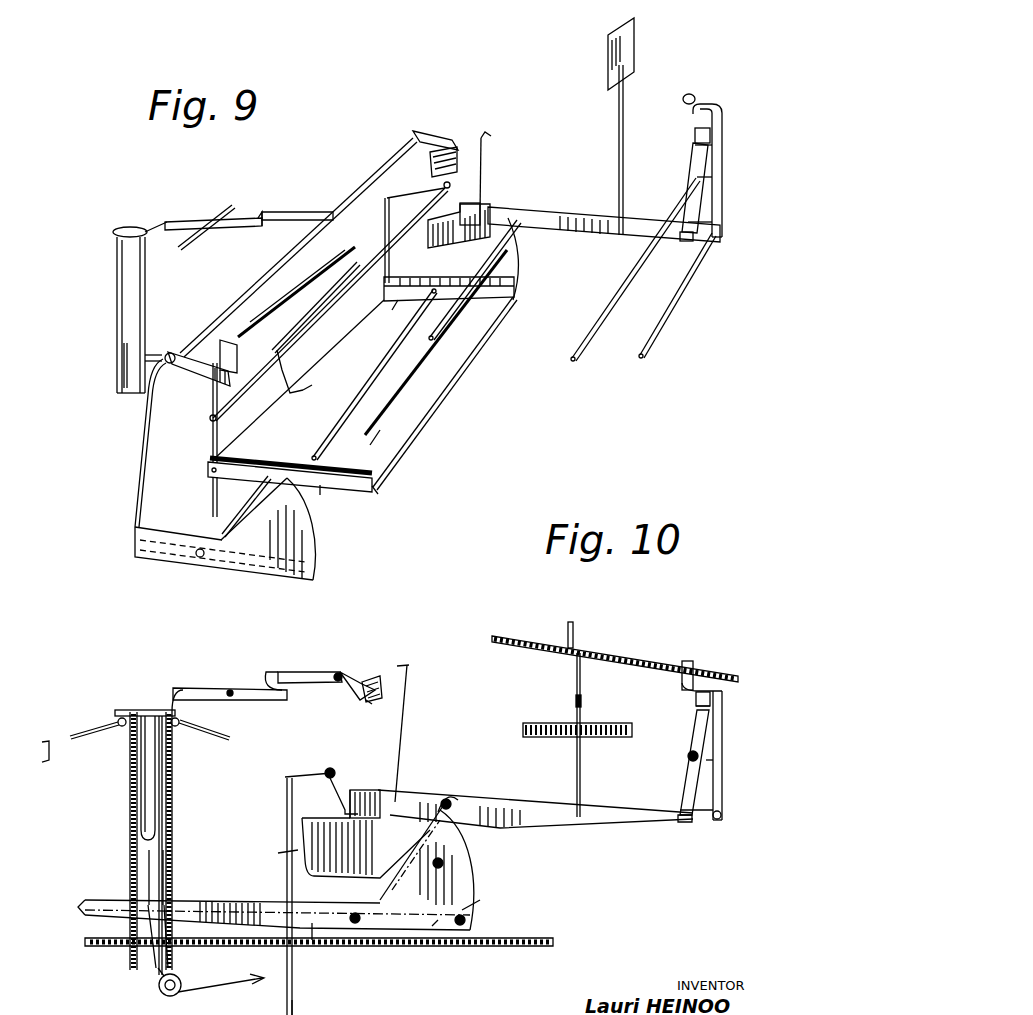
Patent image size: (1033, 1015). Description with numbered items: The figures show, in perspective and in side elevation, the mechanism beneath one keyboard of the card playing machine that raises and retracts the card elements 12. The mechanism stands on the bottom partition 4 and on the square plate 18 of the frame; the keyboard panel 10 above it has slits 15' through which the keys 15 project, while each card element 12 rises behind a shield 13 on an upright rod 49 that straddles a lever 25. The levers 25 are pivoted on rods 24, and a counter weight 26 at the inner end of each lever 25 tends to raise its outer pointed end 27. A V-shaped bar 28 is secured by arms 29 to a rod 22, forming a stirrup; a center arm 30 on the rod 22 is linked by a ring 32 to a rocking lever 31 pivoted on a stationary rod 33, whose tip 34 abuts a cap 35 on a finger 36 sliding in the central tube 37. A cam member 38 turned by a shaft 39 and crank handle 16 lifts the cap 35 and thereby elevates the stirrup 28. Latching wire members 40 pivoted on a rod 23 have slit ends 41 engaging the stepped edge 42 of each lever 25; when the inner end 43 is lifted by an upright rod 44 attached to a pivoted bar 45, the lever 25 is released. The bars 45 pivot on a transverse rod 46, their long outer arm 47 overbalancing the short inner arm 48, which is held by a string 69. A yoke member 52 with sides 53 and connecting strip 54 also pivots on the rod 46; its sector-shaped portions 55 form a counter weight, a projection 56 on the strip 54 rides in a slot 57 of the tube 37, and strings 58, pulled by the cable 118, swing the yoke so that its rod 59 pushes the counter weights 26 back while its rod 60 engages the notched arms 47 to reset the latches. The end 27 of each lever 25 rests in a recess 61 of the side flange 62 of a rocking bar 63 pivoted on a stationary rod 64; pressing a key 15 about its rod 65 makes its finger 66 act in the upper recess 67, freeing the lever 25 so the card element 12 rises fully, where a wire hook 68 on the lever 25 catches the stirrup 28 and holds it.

In FIG. 10, the bottom partition 4 is at (274, 857).
In FIG. 10, the panel 10 is at (626, 658).
In FIG. 9, the card elements 12 is at (634, 46).
In FIG. 10, the card elements 12 is at (576, 678).
In FIG. 10, the shield 13 is at (575, 636).
In FIG. 9, the keys 15 is at (717, 165).
In FIG. 10, the slits 15' is at (686, 726).
In FIG. 10, the crank handle 16 is at (47, 760).
In FIG. 10, the square plate 18 is at (476, 947).
In FIG. 9, the rod 22 is at (228, 308).
In FIG. 10, the rod 22 is at (347, 666).
In FIG. 9, the rod 23 is at (306, 336).
In FIG. 10, the rod 23 is at (334, 768).
In FIG. 9, the pivot rods 24 is at (410, 355).
In FIG. 10, the pivot rods 24 is at (446, 798).
In FIG. 9, the levers 25 is at (560, 220).
In FIG. 10, the levers 25 is at (474, 800).
In FIG. 9, the counter weight 26 is at (442, 242).
In FIG. 10, the counter weight 26 is at (300, 832).
In FIG. 9, the outer pointed end 27 is at (676, 241).
In FIG. 10, the outer pointed end 27 is at (672, 818).
In FIG. 9, the V-shaped bar 28 is at (350, 250).
In FIG. 10, the V-shaped bar 28 is at (370, 702).
In FIG. 9, the arms 29 is at (432, 140).
In FIG. 10, the arms 29 is at (360, 680).
In FIG. 9, the center arm 30 is at (305, 214).
In FIG. 10, the center arm 30 is at (322, 676).
In FIG. 9, the rocking lever 31 is at (220, 230).
In FIG. 10, the rocking lever 31 is at (204, 690).
In FIG. 9, the ring 32 is at (260, 228).
In FIG. 10, the ring 32 is at (279, 670).
In FIG. 9, the stationary pivot rod 33 is at (195, 240).
In FIG. 10, the stationary pivot rod 33 is at (232, 690).
In FIG. 9, the downwardly extending tip 34 is at (147, 230).
In FIG. 10, the downwardly extending tip 34 is at (178, 690).
In FIG. 9, the cap 35 is at (120, 240).
In FIG. 10, the cap 35 is at (146, 710).
In FIG. 10, the finger 36 is at (150, 771).
In FIG. 9, the central upright tube 37 is at (116, 308).
In FIG. 10, the central upright tube 37 is at (172, 812).
In FIG. 10, the cam members 38 is at (118, 720).
In FIG. 10, the shaft 39 is at (84, 738).
In FIG. 9, the latching wire members 40 is at (287, 376).
In FIG. 10, the latching wire members 40 is at (338, 800).
In FIG. 9, the slit end 41 is at (316, 380).
In FIG. 10, the slit end 41 is at (352, 792).
In FIG. 9, the stepped inner edge portion 42 is at (467, 203).
In FIG. 10, the stepped inner edge portion 42 is at (371, 790).
In FIG. 9, the inner end 43 is at (233, 354).
In FIG. 10, the inner end 43 is at (302, 774).
In FIG. 9, the upright rod 44 is at (384, 222).
In FIG. 9, the pivoted bars 45 is at (355, 403).
In FIG. 10, the pivoted bars 45 is at (338, 902).
In FIG. 9, the transverse rod 46 is at (380, 340).
In FIG. 10, the transverse rod 46 is at (354, 924).
In FIG. 9, the outer arm 47 is at (355, 496).
In FIG. 10, the outer arm 47 is at (432, 930).
In FIG. 9, the inner arm 48 is at (264, 462).
In FIG. 10, the inner arm 48 is at (304, 945).
In FIG. 9, the upright rod 49 is at (624, 120).
In FIG. 10, the upright rod 49 is at (581, 720).
In FIG. 9, the yoke member 52 is at (142, 470).
In FIG. 10, the yoke member 52 is at (250, 906).
In FIG. 9, the sides 53 is at (182, 534).
In FIG. 9, the connecting strip 54 is at (258, 318).
In FIG. 9, the sector-shaped portions 55 is at (312, 530).
In FIG. 10, the sector-shaped portions 55 is at (470, 858).
In FIG. 9, the projection 56 is at (160, 354).
In FIG. 10, the projection 56 is at (178, 902).
In FIG. 9, the slot 57 is at (121, 384).
In FIG. 10, the slot 57 is at (170, 884).
In FIG. 10, the strings 58 is at (156, 975).
In FIG. 9, the transverse rod 59 is at (452, 306).
In FIG. 10, the transverse rod 59 is at (444, 863).
In FIG. 9, the rod 60 is at (430, 398).
In FIG. 10, the rod 60 is at (466, 920).
In FIG. 9, the recess 61 is at (700, 222).
In FIG. 10, the recess 61 is at (696, 810).
In FIG. 9, the side flange 62 is at (712, 175).
In FIG. 10, the side flange 62 is at (700, 766).
In FIG. 9, the rocking bar 63 is at (688, 198).
In FIG. 10, the rocking bar 63 is at (684, 776).
In FIG. 9, the stationary transverse rod 64 is at (606, 316).
In FIG. 10, the stationary transverse rod 64 is at (687, 756).
In FIG. 9, the stationary transverse rod 65 is at (672, 310).
In FIG. 10, the stationary transverse rod 65 is at (714, 820).
In FIG. 9, the finger 66 is at (696, 136).
In FIG. 10, the finger 66 is at (696, 700).
In FIG. 9, the upper recess 67 is at (712, 147).
In FIG. 10, the upper recess 67 is at (700, 710).
In FIG. 9, the wire hook 68 is at (487, 158).
In FIG. 10, the wire hook 68 is at (402, 738).
In FIG. 9, the string 69 is at (211, 491).
In FIG. 10, the string 69 is at (294, 1002).
In FIG. 10, the cable 118 is at (230, 992).